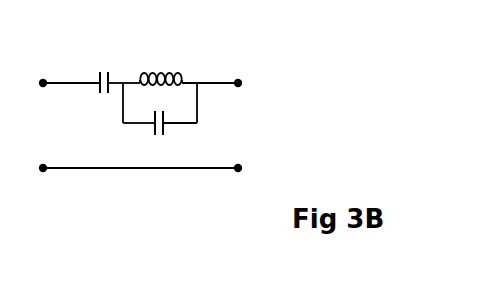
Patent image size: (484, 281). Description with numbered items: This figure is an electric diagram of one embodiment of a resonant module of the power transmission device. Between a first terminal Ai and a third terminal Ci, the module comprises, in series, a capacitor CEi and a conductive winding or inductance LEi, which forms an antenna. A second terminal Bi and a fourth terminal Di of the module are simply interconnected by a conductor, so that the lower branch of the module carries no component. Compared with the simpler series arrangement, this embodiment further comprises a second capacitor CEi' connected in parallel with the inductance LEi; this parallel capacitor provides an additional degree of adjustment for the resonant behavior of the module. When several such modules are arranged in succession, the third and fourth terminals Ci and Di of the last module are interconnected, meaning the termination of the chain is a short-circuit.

The first terminal Ai is at (42, 67).
The second terminal Bi is at (41, 186).
The third terminal Ci is at (238, 67).
The fourth terminal Di is at (240, 186).
The capacitor CEi is at (95, 53).
The inductance LEi is at (160, 73).
The second capacitor CEi' is at (201, 131).